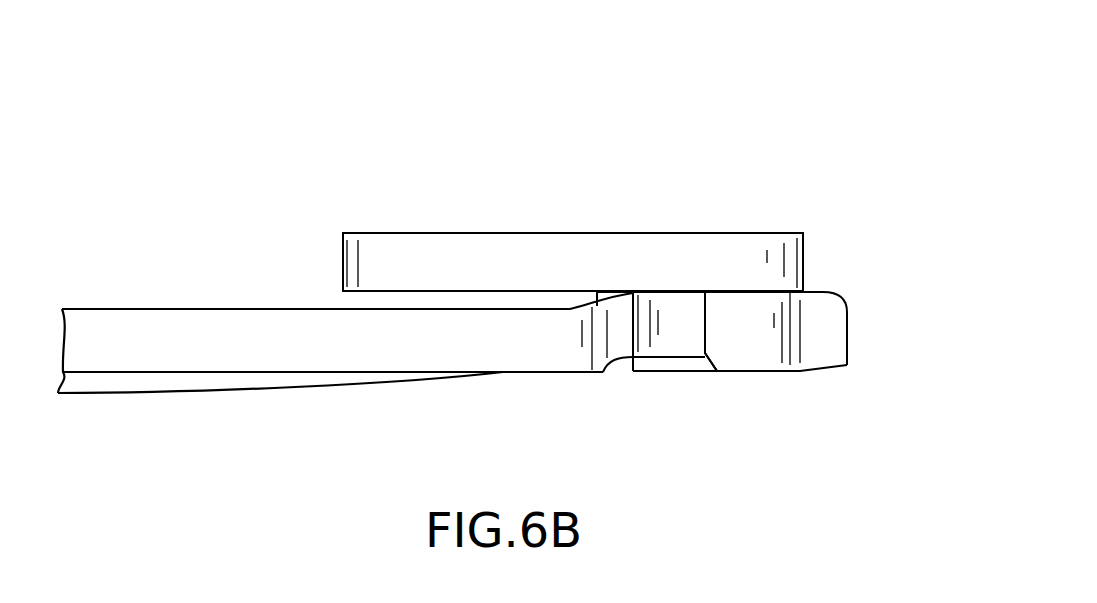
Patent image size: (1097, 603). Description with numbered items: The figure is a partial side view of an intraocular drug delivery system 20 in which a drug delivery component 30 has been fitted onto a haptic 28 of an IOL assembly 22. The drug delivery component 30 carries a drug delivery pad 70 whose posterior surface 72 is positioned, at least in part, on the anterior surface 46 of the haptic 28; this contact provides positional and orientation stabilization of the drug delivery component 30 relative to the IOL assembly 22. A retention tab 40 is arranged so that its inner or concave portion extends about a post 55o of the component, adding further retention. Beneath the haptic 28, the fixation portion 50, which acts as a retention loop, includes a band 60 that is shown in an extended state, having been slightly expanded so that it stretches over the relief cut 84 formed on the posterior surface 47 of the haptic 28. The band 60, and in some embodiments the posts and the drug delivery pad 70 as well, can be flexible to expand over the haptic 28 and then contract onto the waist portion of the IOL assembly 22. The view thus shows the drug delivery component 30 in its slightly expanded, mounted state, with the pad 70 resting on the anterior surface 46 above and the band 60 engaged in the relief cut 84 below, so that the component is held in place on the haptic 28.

The intraocular drug delivery system 20 is at (800, 143).
The IOL assembly 22 is at (182, 237).
The haptic 28 is at (867, 292).
The drug delivery component 30 is at (353, 205).
The retention tab 40 is at (765, 353).
The anterior surface 46 is at (750, 288).
The posterior surface 47 is at (745, 370).
The fixation portion 50 is at (630, 335).
The post 55o is at (672, 342).
The band 60 is at (700, 370).
The drug delivery pad 70 is at (540, 232).
The posterior surface 72 is at (413, 292).
The relief cut 84 is at (635, 375).